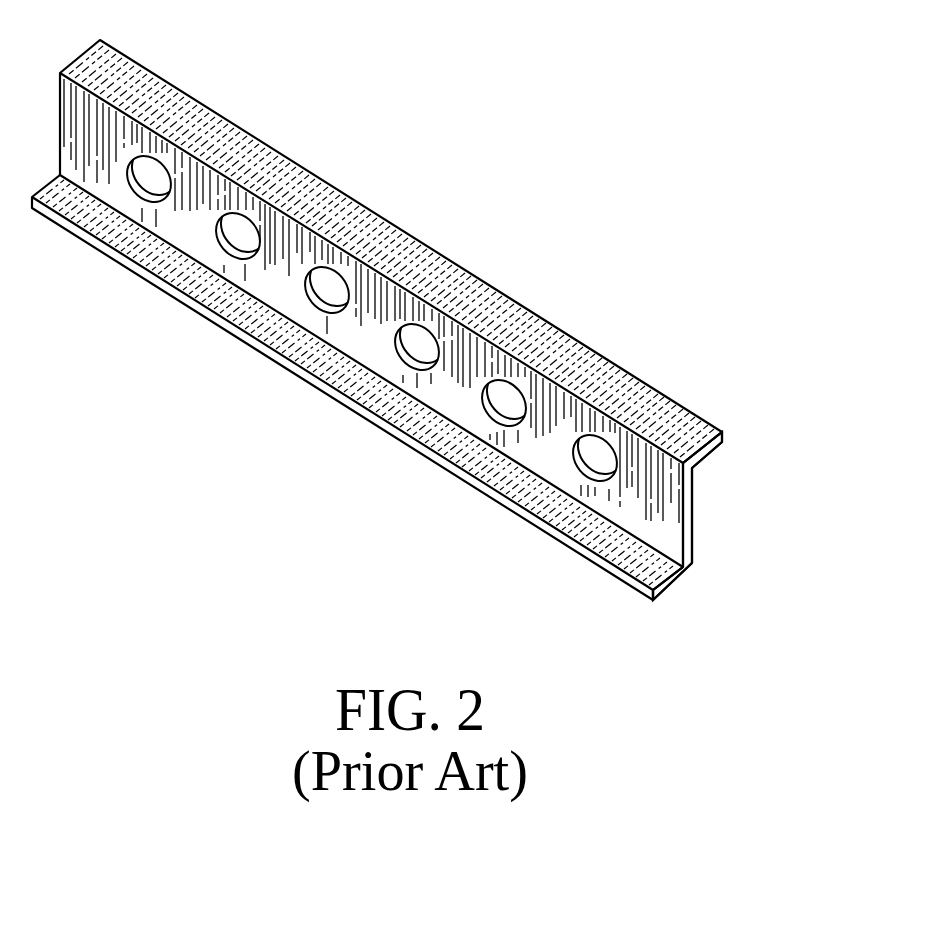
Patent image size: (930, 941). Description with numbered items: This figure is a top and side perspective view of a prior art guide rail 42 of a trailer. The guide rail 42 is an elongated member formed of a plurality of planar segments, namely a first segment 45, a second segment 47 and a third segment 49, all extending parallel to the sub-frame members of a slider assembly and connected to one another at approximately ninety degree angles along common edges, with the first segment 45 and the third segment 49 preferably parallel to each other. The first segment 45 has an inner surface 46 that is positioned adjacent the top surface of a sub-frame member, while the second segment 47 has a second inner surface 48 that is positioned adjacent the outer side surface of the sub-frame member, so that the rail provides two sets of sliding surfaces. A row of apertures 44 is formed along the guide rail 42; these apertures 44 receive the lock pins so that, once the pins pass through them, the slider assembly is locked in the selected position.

The guide rail 42 is at (529, 176).
The apertures 44 is at (242, 234).
The first segment 45 is at (571, 347).
The inner surface 46 is at (713, 452).
The second segment 47 is at (693, 567).
The second inner surface 48 is at (695, 517).
The third segment 49 is at (585, 527).